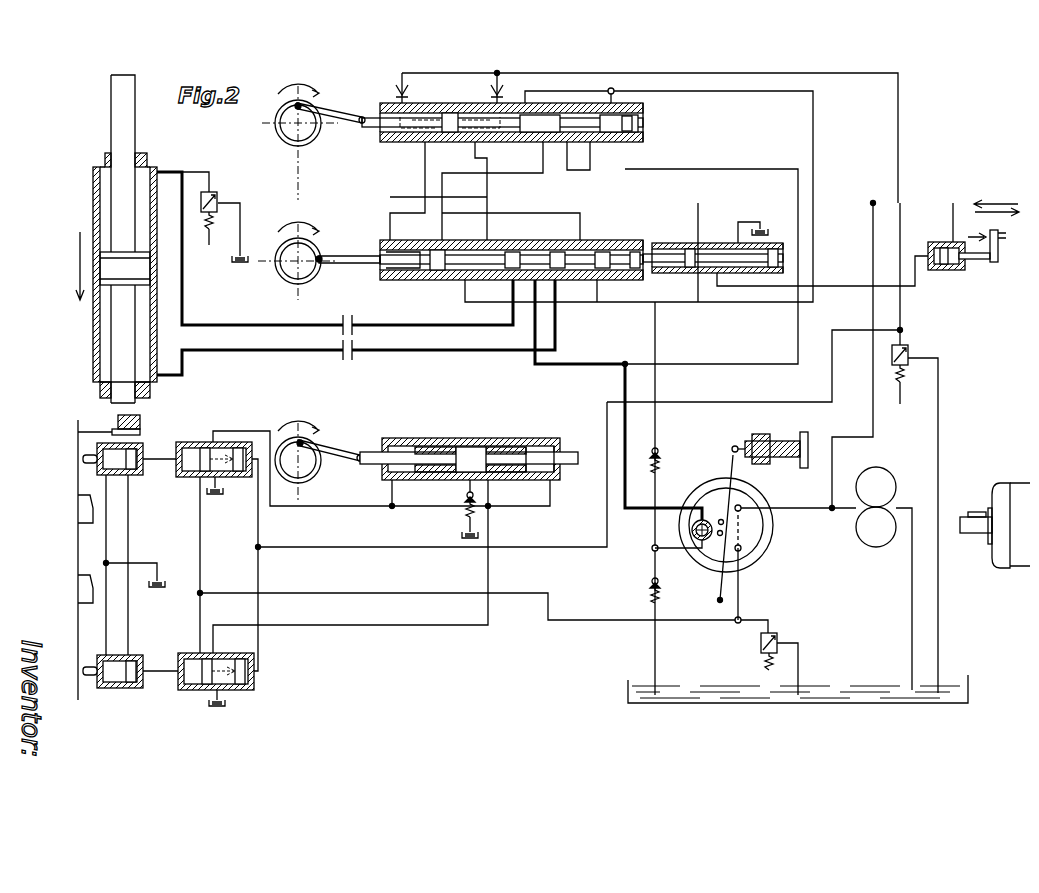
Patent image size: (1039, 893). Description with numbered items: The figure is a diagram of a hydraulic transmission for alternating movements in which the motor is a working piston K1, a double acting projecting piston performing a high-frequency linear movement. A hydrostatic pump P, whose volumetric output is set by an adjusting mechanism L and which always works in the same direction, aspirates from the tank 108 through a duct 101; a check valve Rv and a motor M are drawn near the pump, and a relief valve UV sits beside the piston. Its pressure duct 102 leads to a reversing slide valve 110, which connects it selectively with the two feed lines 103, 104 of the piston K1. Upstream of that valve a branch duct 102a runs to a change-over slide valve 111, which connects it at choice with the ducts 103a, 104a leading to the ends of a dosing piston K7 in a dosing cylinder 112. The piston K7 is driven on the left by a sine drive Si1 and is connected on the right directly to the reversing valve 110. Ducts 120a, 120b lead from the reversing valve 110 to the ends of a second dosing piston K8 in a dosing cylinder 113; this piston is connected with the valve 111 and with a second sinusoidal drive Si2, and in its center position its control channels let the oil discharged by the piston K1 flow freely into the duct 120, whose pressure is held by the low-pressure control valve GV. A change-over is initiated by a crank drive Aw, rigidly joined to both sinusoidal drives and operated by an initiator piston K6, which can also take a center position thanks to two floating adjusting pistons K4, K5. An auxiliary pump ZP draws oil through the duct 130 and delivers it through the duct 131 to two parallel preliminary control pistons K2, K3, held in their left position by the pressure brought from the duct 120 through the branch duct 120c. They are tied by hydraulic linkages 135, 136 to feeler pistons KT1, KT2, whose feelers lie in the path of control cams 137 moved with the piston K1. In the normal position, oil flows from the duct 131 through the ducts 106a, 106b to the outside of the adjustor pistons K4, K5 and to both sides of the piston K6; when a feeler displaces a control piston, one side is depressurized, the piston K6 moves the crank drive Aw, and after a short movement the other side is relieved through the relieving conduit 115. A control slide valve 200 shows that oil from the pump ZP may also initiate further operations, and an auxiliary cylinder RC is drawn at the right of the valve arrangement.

The working piston K1 is at (116, 255).
The feed line 103 is at (184, 170).
The feed line 104 is at (282, 350).
The pressure relief valve UV is at (215, 217).
The second sinusoidal drive Si2 is at (313, 142).
The sine drive Si1 is at (319, 261).
The crank drive Aw is at (319, 460).
The dosing piston K8 is at (502, 133).
The dosing cylinder 113 is at (400, 92).
The duct 120 is at (410, 93).
The duct 101 is at (527, 91).
The change-over slide valve 111 is at (628, 133).
The duct 103a is at (545, 165).
The duct 104a is at (590, 182).
The duct 120a is at (488, 223).
The duct 120b is at (552, 211).
The branch duct 102a is at (657, 169).
The dosing piston K7 is at (433, 275).
The dosing cylinder 112 is at (399, 280).
The pressure duct 102 is at (640, 510).
The reversing slide valve 110 is at (578, 279).
The control slide valve 200 is at (713, 238).
The auxiliary cylinder RC is at (973, 235).
The low-pressure control valve GV is at (885, 447).
The branch duct 120c is at (752, 400).
The floating adjusting piston K4 is at (418, 438).
The floating adjusting piston K5 is at (525, 438).
The initiator piston K6 is at (471, 459).
The relieving conduit 115 is at (474, 486).
The duct 106a is at (341, 506).
The duct 106b is at (366, 625).
The duct 131 is at (361, 593).
The feeler piston KT1 is at (124, 549).
The hydraulic linkage 135 is at (156, 456).
The preliminary control piston K2 is at (192, 442).
The control cam 137 is at (90, 522).
The feeler piston KT2 is at (113, 671).
The hydraulic linkage 136 is at (156, 668).
The preliminary control piston K3 is at (188, 653).
The pump P is at (748, 494).
The adjusting mechanism L is at (776, 440).
The check valve Rv is at (667, 589).
The auxiliary pump ZP is at (882, 472).
The duct 130 is at (912, 592).
The tank 108 is at (630, 694).
The motor M is at (1000, 570).